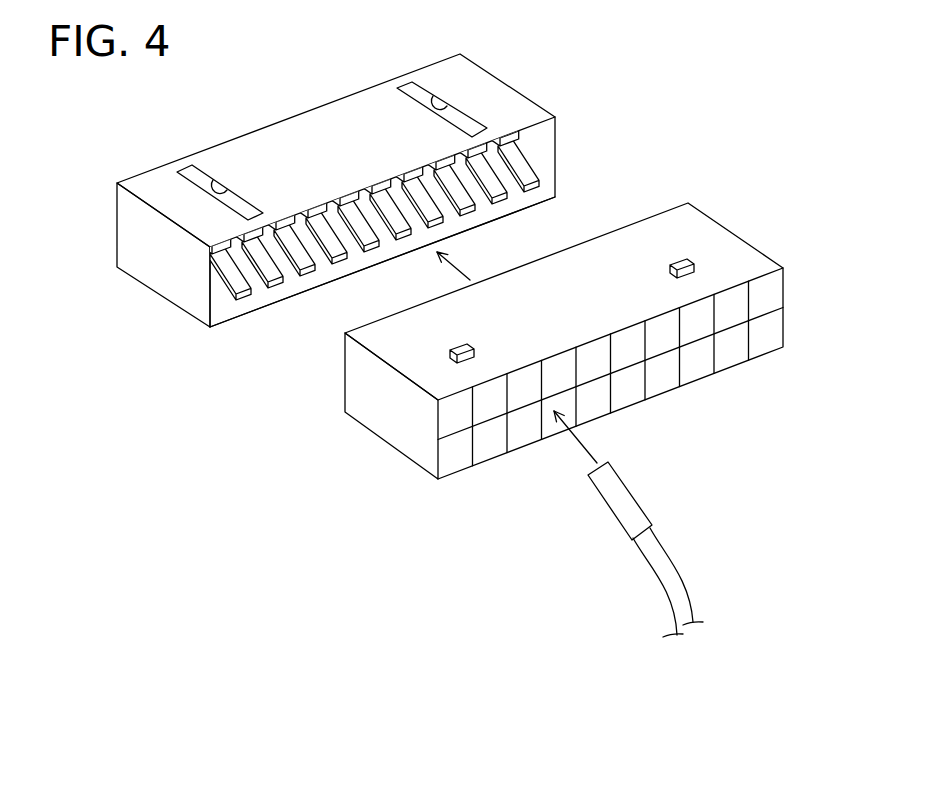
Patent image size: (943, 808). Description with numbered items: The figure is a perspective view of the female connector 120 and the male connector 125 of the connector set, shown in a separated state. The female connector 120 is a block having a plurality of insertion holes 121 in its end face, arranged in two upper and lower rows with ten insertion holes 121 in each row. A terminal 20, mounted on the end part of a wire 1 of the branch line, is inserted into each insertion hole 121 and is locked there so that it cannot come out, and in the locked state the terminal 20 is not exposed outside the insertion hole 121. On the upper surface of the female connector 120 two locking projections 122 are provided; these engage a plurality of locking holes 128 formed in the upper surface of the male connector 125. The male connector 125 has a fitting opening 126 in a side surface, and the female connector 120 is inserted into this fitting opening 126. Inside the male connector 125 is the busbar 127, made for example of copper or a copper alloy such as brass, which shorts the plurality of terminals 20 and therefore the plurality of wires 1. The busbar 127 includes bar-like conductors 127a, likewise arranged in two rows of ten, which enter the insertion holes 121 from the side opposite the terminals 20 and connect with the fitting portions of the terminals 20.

The male connector 125 is at (473, 75).
The locking hole 128 is at (220, 186).
The busbar 127 is at (524, 177).
The bar-like conductor 127a is at (524, 140).
The fitting opening 126 is at (218, 308).
The female connector 120 is at (665, 218).
The insertion hole 121 is at (458, 453).
The locking projection 122 is at (468, 346).
The terminal 20 is at (630, 508).
The wire 1 is at (676, 580).